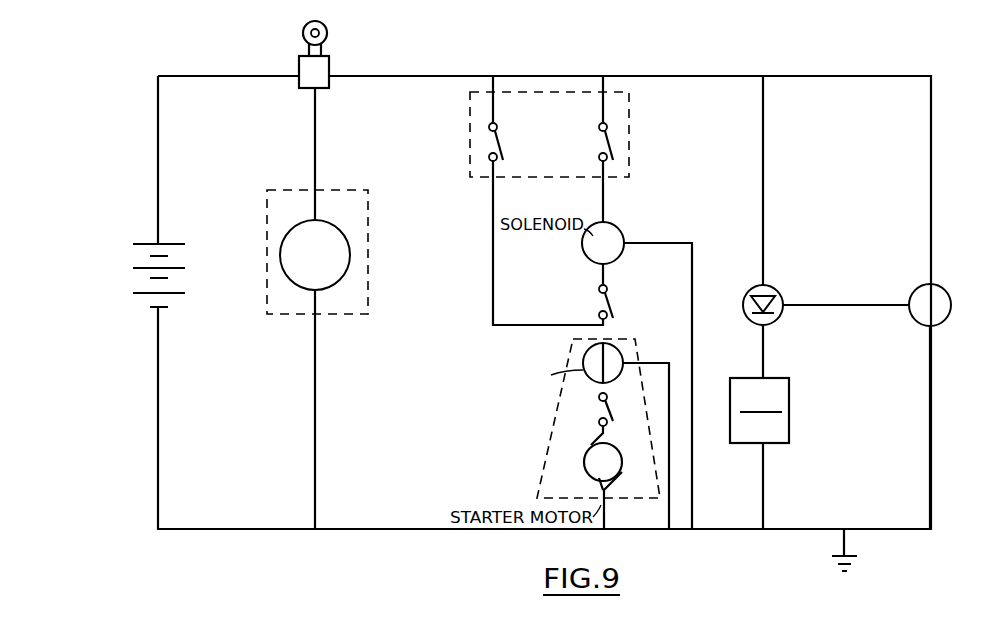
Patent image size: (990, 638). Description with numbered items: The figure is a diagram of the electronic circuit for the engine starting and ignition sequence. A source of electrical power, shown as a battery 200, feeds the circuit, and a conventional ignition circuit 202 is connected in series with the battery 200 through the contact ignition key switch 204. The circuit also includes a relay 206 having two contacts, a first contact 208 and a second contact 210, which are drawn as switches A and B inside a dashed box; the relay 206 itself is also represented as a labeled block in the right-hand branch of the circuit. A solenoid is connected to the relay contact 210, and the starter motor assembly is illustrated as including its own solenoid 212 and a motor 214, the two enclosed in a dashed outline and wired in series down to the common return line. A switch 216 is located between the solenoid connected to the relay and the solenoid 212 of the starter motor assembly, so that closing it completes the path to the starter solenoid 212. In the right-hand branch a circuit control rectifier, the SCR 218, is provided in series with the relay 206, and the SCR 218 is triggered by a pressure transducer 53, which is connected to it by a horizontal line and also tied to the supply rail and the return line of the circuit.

The battery 200 is at (143, 236).
The ignition circuit 202 is at (267, 200).
The ignition key switch 204 is at (299, 68).
The relay 206 is at (470, 116).
The relay contact 208 is at (500, 142).
The relay contact 210 is at (600, 140).
The solenoid 212 is at (583, 358).
The motor 214 is at (572, 458).
The switch 216 is at (600, 300).
The circuit control rectifier (SCR) 218 is at (775, 296).
The pressure transducer 53 is at (940, 318).